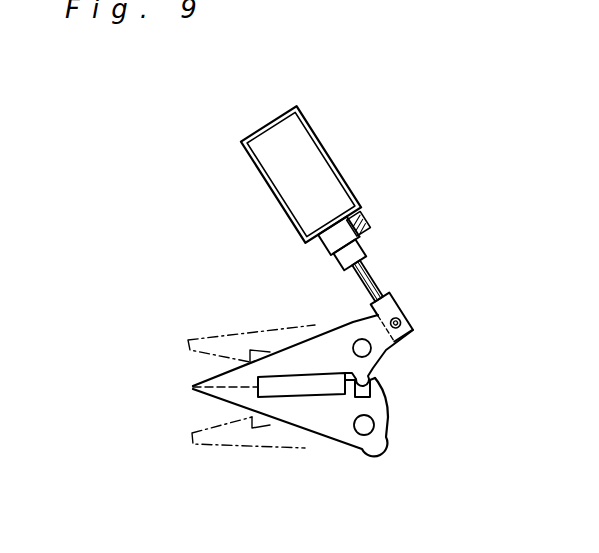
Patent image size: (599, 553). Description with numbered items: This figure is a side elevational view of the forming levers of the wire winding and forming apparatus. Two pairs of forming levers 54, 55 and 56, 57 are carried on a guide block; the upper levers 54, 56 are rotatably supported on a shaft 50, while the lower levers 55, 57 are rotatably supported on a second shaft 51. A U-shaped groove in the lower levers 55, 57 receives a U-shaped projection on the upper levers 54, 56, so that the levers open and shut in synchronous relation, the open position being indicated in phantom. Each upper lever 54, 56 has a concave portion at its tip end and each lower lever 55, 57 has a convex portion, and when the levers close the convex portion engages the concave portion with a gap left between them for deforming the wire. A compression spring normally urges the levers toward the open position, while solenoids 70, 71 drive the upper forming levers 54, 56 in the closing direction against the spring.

The shaft 50 is at (362, 348).
The shaft 51 is at (364, 425).
The forming lever 54 is at (296, 323).
The forming lever 55 is at (290, 450).
The forming lever 56 is at (290, 357).
The forming lever 57 is at (360, 387).
The solenoid 70 is at (305, 162).
The solenoid 71 is at (380, 298).